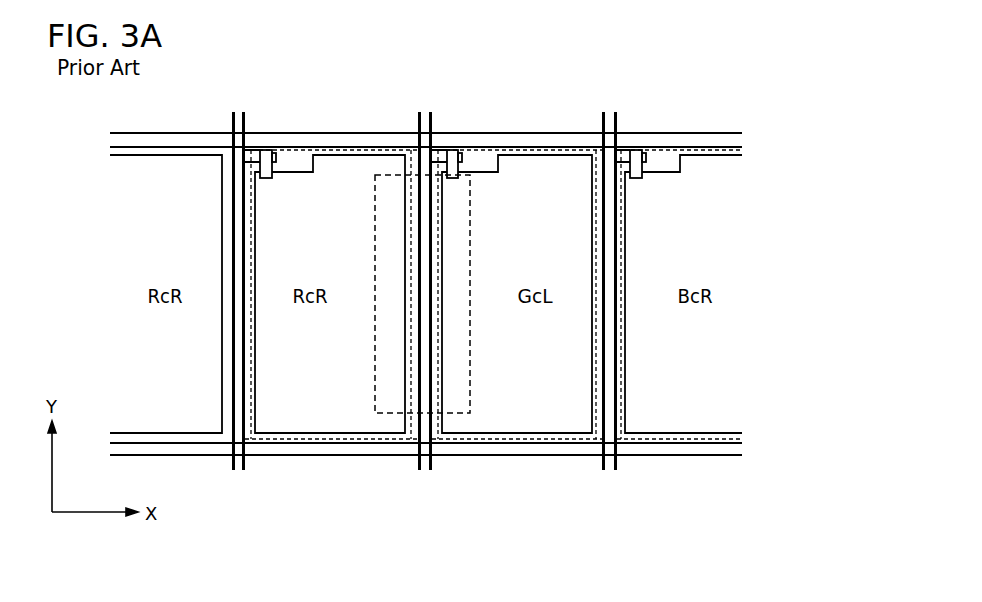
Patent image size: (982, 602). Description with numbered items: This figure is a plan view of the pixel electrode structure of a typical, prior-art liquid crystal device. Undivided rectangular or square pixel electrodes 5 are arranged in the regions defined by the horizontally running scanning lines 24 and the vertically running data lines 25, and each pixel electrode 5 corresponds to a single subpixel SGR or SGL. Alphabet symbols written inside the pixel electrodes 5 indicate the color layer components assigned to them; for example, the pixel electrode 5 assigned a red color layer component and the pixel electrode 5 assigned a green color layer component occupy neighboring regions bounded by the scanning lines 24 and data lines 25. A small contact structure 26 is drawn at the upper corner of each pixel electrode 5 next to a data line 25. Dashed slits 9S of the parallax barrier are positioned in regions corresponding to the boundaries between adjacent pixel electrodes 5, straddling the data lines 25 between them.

The scanning line 24 is at (742, 140).
The data line 25 is at (237, 470).
The contact portion 26 is at (266, 168).
The pixel electrode 5 is at (338, 160).
The slit 9S is at (388, 170).
The subpixel SGR is at (290, 448).
The subpixel SGL is at (520, 448).